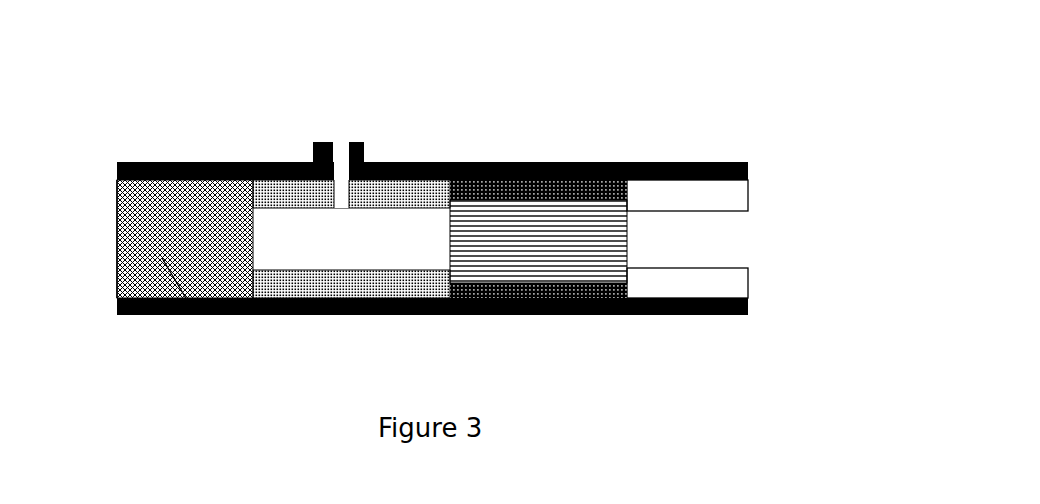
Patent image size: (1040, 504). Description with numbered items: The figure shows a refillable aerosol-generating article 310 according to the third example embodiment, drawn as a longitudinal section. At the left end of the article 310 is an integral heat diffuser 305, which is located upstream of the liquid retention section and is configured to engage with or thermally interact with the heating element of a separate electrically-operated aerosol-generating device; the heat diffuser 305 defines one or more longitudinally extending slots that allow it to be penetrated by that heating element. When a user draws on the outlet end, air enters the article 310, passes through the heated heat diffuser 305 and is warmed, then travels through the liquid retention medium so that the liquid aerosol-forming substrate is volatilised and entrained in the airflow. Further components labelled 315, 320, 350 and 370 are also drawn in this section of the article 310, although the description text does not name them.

The heat diffuser 305 is at (193, 313).
The refillable aerosol-generating article 310 is at (684, 117).
The inlet channel 315 is at (341, 134).
The porous layer 320 is at (396, 162).
The layered stack 350 is at (500, 315).
The end wall 370 is at (117, 267).